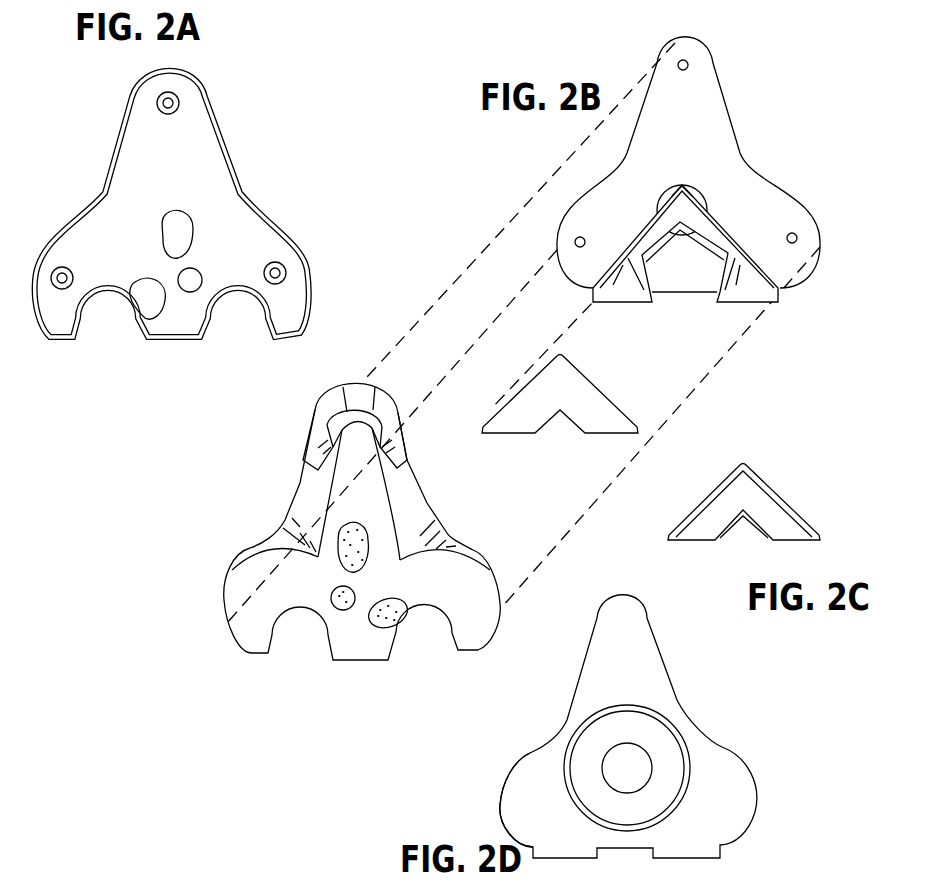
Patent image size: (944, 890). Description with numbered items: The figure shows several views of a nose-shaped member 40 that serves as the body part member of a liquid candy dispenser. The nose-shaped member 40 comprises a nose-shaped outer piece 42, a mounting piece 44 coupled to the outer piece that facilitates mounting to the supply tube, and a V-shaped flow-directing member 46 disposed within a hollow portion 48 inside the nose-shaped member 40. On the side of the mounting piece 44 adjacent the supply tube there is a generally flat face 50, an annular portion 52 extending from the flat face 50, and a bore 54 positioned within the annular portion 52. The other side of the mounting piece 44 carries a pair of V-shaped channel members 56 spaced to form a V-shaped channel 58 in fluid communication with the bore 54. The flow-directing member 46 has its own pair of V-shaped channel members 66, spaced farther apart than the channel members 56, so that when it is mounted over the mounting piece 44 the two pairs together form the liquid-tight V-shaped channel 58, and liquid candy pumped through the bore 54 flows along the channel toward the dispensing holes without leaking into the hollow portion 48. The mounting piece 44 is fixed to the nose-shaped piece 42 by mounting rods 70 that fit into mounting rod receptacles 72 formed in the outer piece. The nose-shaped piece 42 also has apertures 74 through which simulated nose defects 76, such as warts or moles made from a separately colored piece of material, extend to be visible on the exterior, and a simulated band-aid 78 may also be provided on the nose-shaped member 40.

In FIG. 2B, the nose-shaped member 40 is at (480, 230).
In FIG. 2A, the nose-shaped outer piece 42 is at (232, 133).
In FIG. 2B, the nose-shaped outer piece 42 is at (251, 539).
In FIG. 2B, the mounting piece 44 is at (745, 96).
In FIG. 2D, the mounting piece 44 is at (679, 673).
In FIG. 2B, the V-shaped flow-directing member 46 is at (501, 442).
In FIG. 2C, the V-shaped flow-directing member 46 is at (788, 490).
In FIG. 2A, the hollow portion 48 is at (138, 188).
In FIG. 2D, the flat face 50 is at (738, 793).
In FIG. 2D, the annular portion 52 is at (690, 758).
In FIG. 2B, the bore 54 is at (702, 205).
In FIG. 2D, the bore 54 is at (618, 755).
In FIG. 2B, the V-shaped channel members 56 is at (740, 240).
In FIG. 2B, the V-shaped channel 58 is at (704, 231).
In FIG. 2C, the V-shaped channel members 66 is at (755, 472).
In FIG. 2B, the mounting rods 70 is at (688, 63).
In FIG. 2A, the mounting rod receptacles 72 is at (180, 94).
In FIG. 2A, the apertures 74 is at (197, 228).
In FIG. 2B, the simulated nose defects 76 is at (333, 611).
In FIG. 2B, the simulated band-aid 78 is at (328, 428).